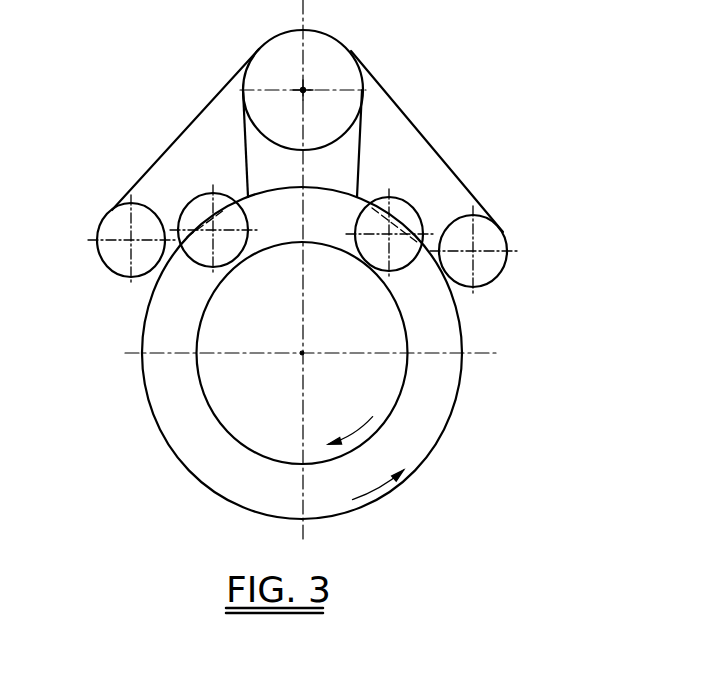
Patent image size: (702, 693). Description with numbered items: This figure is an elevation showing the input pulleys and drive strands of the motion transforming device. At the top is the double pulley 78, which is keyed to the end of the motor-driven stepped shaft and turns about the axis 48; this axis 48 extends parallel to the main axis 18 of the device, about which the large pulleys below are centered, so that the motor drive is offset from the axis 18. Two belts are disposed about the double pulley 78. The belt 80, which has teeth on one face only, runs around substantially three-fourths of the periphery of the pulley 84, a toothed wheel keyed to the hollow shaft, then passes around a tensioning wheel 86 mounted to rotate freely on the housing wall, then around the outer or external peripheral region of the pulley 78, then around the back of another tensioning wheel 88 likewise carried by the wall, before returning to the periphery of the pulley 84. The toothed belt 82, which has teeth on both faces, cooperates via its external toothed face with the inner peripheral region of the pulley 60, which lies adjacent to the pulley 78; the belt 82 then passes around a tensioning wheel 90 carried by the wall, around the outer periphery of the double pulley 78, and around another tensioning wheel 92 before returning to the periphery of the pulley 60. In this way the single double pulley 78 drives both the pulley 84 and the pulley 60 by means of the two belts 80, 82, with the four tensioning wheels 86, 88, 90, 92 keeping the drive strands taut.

The axis 18 is at (302, 353).
The axis 48 is at (303, 90).
The pulley 60 is at (423, 476).
The double pulley 78 is at (330, 61).
The belt 80 is at (243, 140).
The toothed belt 82 is at (222, 88).
The pulley 84 is at (398, 412).
The tensioning wheel 86 is at (225, 253).
The tensioning wheel 88 is at (405, 250).
The tensioning wheel 90 is at (130, 265).
The tensioning wheel 92 is at (471, 276).